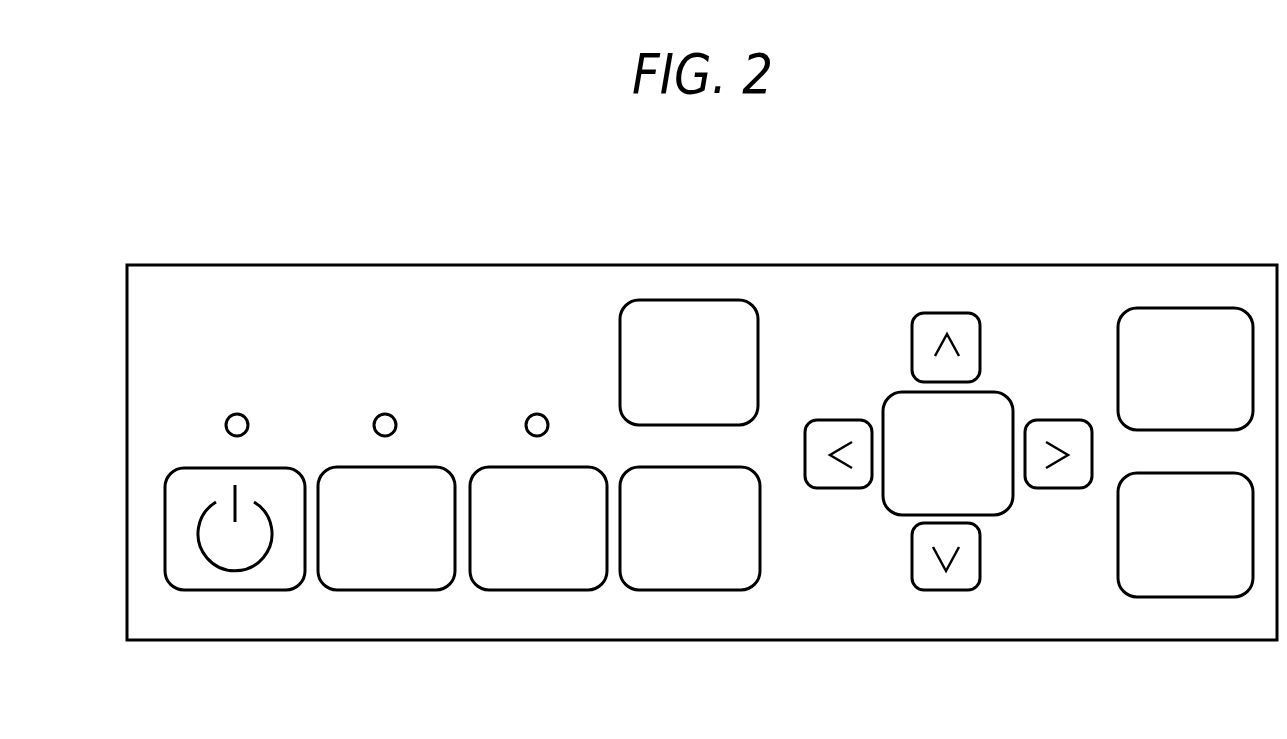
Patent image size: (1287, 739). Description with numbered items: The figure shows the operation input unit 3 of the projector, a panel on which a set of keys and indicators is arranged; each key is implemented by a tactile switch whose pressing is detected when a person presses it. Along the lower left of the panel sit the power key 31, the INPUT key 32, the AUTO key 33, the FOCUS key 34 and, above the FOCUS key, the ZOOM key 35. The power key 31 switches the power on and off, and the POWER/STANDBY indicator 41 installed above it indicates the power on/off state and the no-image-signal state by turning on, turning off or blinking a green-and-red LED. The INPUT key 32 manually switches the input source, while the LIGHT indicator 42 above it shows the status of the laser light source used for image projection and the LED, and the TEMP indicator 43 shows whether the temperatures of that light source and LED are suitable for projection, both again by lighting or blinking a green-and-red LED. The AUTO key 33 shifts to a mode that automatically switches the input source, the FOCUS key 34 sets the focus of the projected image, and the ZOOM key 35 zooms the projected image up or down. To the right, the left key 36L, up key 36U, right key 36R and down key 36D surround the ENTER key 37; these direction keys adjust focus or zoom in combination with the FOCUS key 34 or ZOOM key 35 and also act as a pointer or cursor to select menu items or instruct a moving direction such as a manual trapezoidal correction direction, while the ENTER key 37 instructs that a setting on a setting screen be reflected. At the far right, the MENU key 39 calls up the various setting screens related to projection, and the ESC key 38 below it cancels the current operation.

The operation input unit 3 is at (363, 266).
The power key 31 is at (235, 590).
The INPUT key 32 is at (387, 590).
The AUTO key 33 is at (540, 590).
The FOCUS key 34 is at (682, 590).
The ZOOM key 35 is at (682, 300).
The up key 36U is at (945, 313).
The down key 36D is at (945, 590).
The left key 36L is at (838, 488).
The right key 36R is at (1050, 487).
The ENTER key 37 is at (990, 515).
The ESC key 38 is at (1218, 597).
The MENU key 39 is at (1185, 308).
The POWER/STANDBY indicator 41 is at (249, 426).
The LIGHT indicator 42 is at (397, 426).
The TEMP indicator 43 is at (549, 426).